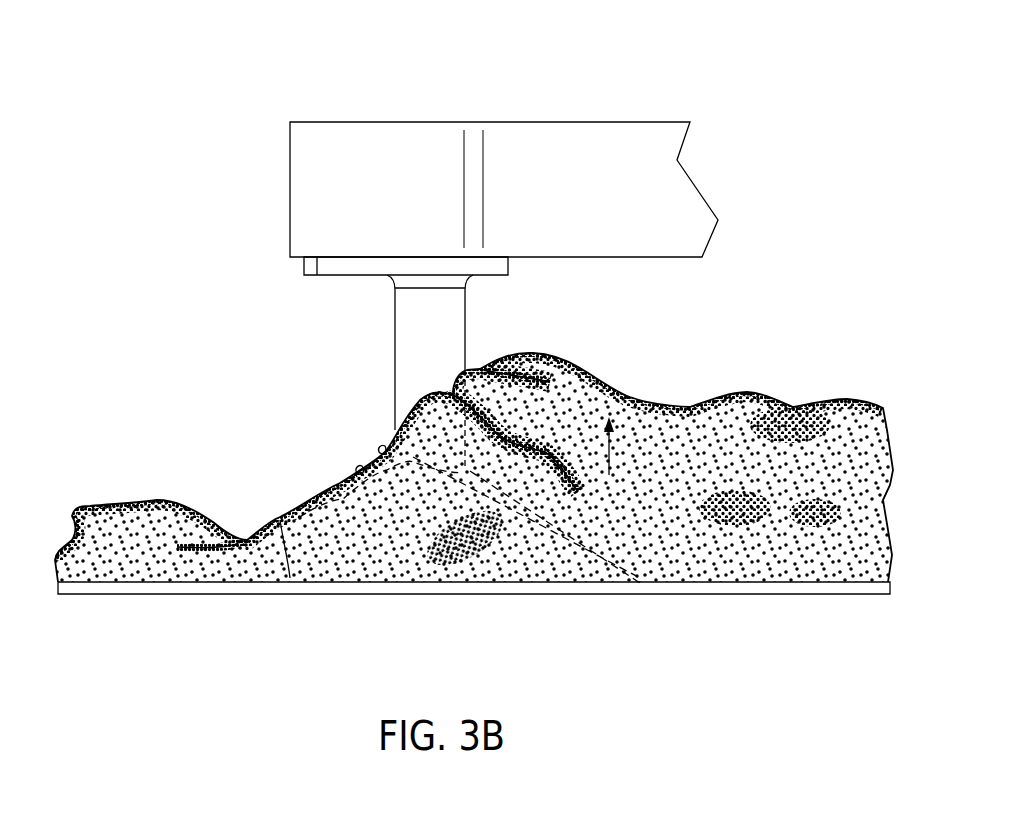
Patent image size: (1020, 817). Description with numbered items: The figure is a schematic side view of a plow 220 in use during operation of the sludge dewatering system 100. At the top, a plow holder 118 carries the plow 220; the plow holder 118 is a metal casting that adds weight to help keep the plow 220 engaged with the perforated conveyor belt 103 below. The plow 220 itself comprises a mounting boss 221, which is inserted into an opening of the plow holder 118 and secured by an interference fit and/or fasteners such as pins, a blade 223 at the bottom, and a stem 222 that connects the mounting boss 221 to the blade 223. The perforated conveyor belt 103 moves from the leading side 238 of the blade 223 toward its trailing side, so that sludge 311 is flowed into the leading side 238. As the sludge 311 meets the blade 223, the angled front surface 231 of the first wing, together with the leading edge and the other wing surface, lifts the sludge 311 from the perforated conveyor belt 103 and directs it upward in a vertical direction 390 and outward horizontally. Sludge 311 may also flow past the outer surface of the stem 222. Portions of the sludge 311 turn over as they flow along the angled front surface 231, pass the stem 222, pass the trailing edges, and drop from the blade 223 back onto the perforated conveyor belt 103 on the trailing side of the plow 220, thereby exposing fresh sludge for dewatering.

The sludge dewatering system 100 is at (632, 55).
The plow holder 118 is at (347, 120).
The plow 220 is at (353, 363).
The mounting boss 221 is at (303, 262).
The stem 222 is at (448, 314).
The blade 223 is at (400, 560).
The angled front surface of the first wing 231 is at (550, 550).
The leading side 238 is at (553, 510).
The vertical direction 390 is at (613, 455).
The sludge 311 is at (748, 387).
The perforated conveyor belt 103 is at (790, 587).